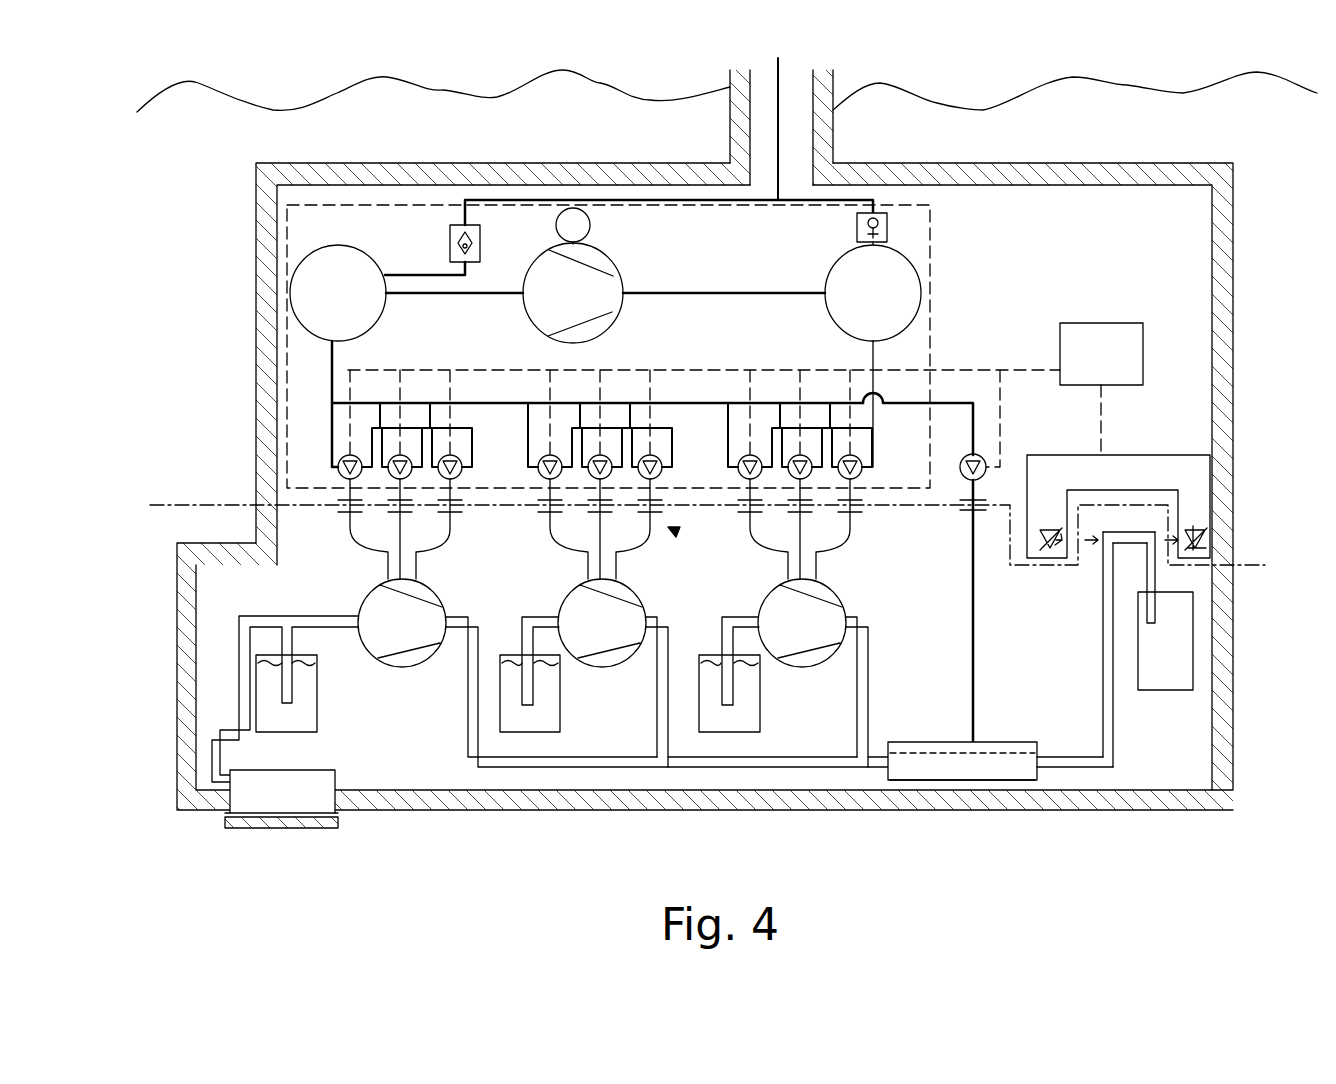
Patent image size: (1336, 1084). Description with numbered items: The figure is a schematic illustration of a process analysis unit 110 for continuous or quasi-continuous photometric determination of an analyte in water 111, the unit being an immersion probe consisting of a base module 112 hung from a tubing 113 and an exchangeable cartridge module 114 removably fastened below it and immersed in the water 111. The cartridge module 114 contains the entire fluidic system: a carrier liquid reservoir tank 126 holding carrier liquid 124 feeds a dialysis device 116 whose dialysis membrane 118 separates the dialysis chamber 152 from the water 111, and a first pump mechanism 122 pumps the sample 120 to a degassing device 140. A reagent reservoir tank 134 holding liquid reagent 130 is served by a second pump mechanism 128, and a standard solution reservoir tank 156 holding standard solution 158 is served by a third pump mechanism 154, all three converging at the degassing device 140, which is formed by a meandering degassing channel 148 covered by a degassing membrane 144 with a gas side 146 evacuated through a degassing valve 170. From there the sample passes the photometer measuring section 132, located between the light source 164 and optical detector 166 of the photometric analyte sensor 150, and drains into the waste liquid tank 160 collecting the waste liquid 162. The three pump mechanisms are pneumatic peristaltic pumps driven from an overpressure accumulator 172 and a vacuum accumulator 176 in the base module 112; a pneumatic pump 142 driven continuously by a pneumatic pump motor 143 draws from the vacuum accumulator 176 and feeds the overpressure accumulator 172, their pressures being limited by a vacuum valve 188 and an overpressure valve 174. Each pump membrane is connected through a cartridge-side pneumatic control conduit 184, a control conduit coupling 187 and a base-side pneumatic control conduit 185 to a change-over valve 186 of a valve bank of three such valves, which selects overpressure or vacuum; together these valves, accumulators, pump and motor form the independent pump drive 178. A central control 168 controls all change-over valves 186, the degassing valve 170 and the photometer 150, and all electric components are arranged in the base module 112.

The process analysis unit 110 is at (193, 200).
The water 111 is at (132, 278).
The base module 112 is at (256, 355).
The tubing 113 is at (735, 140).
The cartridge module 114 is at (175, 592).
The dialysis device 116 is at (272, 829).
The dialysis membrane 118 is at (230, 815).
The sample 120 is at (832, 787).
The first pump mechanism 122 is at (402, 668).
The carrier liquid 124 is at (275, 683).
The carrier liquid reservoir tank 126 is at (284, 736).
The second pump mechanism 128 is at (802, 668).
The liquid reagent 130 is at (745, 720).
The photometer measuring section 132 is at (1138, 525).
The reagent reservoir tank 134 is at (704, 740).
The degassing device 140 is at (933, 782).
The pneumatic pump 142 is at (622, 263).
The pneumatic pump motor 143 is at (570, 208).
The degassing membrane 144 is at (1022, 750).
The gas side 146 is at (912, 748).
The degassing channel 148 is at (1010, 772).
The photometric analyte sensor 150 is at (1143, 472).
The dialysis chamber 152 is at (320, 800).
The third pump mechanism 154 is at (602, 668).
The standard solution reservoir tank 156 is at (505, 740).
The standard solution 158 is at (545, 720).
The waste liquid tank 160 is at (1165, 695).
The waste liquid 162 is at (1185, 675).
The light source 164 is at (1053, 560).
The optical detector 166 is at (1220, 547).
The central control 168 is at (1110, 323).
The degassing valve 170 is at (982, 460).
The overpressure accumulator 172 is at (905, 292).
The overpressure valve 174 is at (890, 225).
The vacuum accumulator 176 is at (340, 275).
The pump drive 178 is at (282, 462).
The pneumatic control conduit 184 is at (430, 545).
The pneumatic control conduit 185 is at (458, 480).
The change-over valve 186 is at (452, 452).
The control conduit coupling 187 is at (672, 531).
The vacuum valve 188 is at (455, 225).